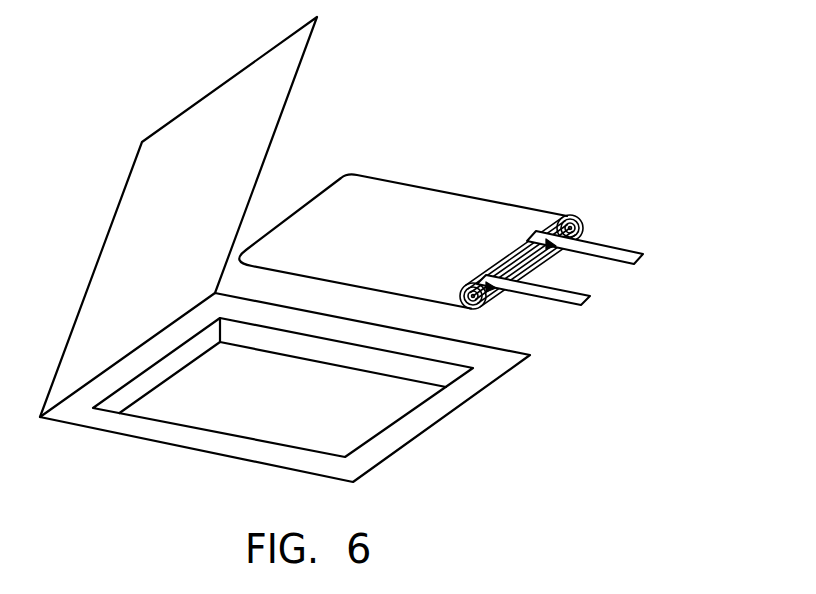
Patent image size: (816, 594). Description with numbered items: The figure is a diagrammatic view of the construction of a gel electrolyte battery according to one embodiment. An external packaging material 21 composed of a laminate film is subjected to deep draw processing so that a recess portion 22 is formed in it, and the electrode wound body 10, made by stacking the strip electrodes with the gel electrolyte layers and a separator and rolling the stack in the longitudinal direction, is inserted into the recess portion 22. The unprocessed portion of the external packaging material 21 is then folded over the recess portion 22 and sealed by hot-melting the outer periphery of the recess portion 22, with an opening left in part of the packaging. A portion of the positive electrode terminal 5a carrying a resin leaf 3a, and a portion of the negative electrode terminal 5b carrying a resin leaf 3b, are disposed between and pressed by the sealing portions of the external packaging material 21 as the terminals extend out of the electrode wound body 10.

The external packaging material 21 is at (293, 85).
The recess portion 22 is at (393, 413).
The electrode wound body 10 is at (472, 196).
The resin leaf 3a is at (552, 247).
The resin leaf 3b is at (490, 287).
The positive electrode terminal 5a is at (642, 257).
The negative electrode terminal 5b is at (587, 298).